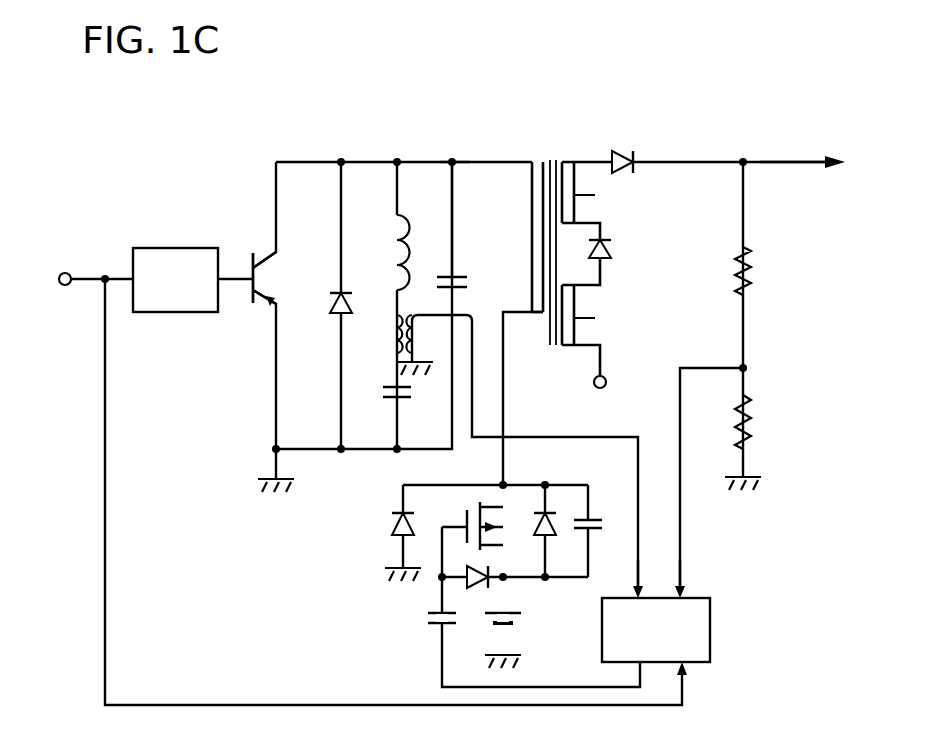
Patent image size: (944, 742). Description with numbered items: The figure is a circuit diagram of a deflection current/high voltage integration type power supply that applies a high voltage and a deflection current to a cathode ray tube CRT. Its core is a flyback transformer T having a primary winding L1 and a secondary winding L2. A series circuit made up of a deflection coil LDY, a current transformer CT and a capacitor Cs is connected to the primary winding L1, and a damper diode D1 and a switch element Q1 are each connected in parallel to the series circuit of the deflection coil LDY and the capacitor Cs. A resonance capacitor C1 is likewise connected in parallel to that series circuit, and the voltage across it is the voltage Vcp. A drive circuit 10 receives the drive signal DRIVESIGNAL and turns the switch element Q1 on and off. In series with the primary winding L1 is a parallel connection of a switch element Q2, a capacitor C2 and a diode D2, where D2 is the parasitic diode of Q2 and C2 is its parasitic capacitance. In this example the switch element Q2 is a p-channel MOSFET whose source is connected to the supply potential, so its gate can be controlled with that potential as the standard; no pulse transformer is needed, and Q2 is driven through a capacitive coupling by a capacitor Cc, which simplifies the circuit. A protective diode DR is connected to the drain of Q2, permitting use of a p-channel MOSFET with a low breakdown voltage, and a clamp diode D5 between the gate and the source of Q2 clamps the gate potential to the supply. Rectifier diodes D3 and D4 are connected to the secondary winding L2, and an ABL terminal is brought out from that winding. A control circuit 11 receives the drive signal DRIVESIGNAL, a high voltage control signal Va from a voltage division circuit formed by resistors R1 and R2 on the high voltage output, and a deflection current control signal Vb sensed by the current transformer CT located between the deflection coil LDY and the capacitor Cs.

The drive circuit 10 is at (150, 248).
The control circuit 11 is at (708, 598).
The switch element Q1 is at (245, 250).
The switch element Q2 is at (494, 497).
The damper diode D1 is at (352, 298).
The diode D2 is at (555, 531).
The rectifier diode D3 is at (620, 148).
The rectifier diode D4 is at (612, 253).
The clamp diode D5 is at (479, 587).
The protective diode DR is at (387, 526).
The resonance capacitor C1 is at (468, 283).
The capacitor C2 is at (601, 531).
The capacitor Cs is at (411, 393).
The capacitor Cc is at (428, 623).
The deflection coil LDY is at (417, 252).
The current transformer CT is at (418, 334).
The primary winding L1 is at (526, 245).
The secondary winding L2 is at (597, 257).
The flyback transformer T is at (558, 150).
The resistor R1 is at (756, 270).
The resistor R2 is at (755, 414).
The voltage of the capacitor C1 Vcp is at (480, 162).
The deflection current control signal Vb is at (654, 569).
The high voltage control signal Va is at (696, 569).
The cathode ray tube CRT is at (823, 164).
The automatic brightness limiter terminal ABL is at (596, 393).
The drive signal DRIVESIGNAL is at (77, 255).